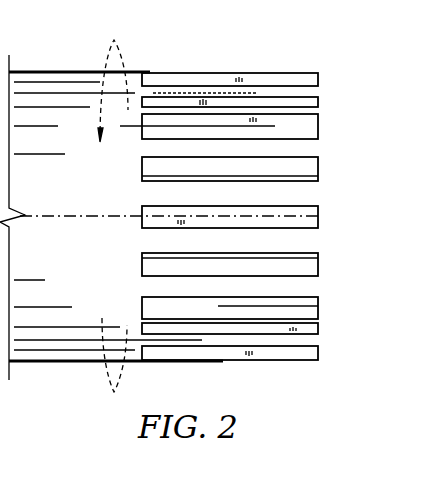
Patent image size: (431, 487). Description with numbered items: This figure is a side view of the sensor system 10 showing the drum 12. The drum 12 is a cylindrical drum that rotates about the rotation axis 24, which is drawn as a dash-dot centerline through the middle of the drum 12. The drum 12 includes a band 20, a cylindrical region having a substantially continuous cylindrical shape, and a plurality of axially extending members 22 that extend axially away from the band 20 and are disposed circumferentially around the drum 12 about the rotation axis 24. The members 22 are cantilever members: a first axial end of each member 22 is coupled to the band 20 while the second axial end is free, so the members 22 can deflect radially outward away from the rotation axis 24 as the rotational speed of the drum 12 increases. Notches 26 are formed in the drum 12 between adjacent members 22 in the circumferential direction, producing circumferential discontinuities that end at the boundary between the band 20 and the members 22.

The heat sink assembly 10 is at (50, 53).
The drum 12 is at (208, 51).
The band 20 is at (58, 283).
The axially extending members 22 is at (321, 167).
The rotation axis 24 is at (321, 216).
The notches 26 is at (302, 285).